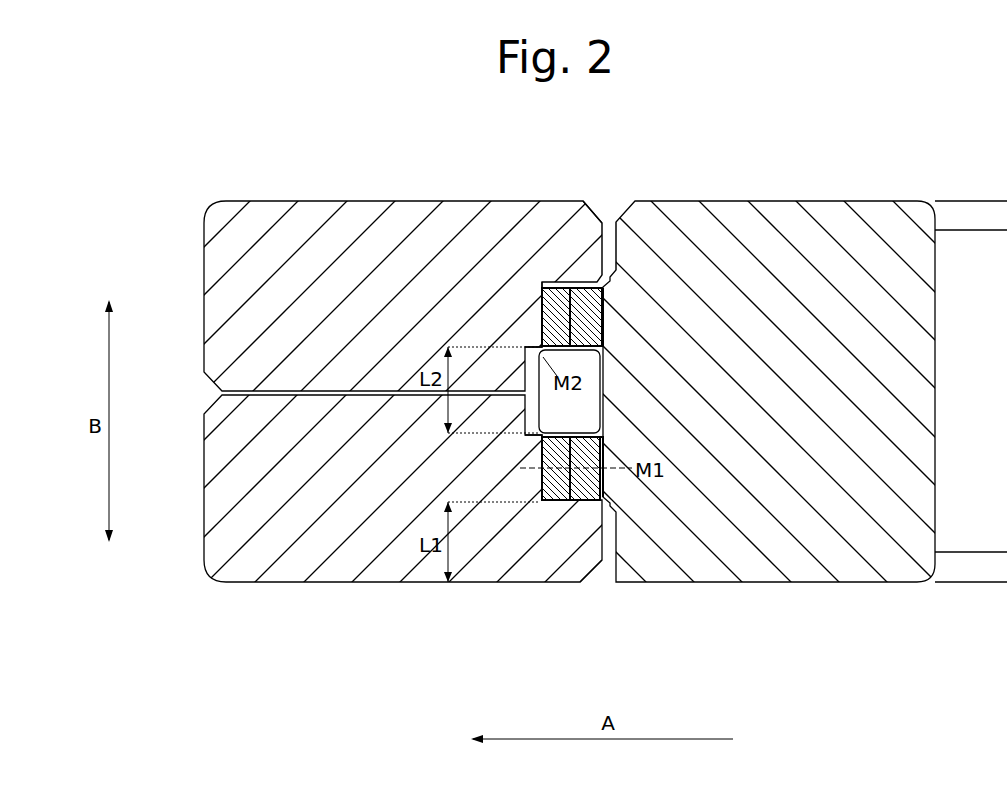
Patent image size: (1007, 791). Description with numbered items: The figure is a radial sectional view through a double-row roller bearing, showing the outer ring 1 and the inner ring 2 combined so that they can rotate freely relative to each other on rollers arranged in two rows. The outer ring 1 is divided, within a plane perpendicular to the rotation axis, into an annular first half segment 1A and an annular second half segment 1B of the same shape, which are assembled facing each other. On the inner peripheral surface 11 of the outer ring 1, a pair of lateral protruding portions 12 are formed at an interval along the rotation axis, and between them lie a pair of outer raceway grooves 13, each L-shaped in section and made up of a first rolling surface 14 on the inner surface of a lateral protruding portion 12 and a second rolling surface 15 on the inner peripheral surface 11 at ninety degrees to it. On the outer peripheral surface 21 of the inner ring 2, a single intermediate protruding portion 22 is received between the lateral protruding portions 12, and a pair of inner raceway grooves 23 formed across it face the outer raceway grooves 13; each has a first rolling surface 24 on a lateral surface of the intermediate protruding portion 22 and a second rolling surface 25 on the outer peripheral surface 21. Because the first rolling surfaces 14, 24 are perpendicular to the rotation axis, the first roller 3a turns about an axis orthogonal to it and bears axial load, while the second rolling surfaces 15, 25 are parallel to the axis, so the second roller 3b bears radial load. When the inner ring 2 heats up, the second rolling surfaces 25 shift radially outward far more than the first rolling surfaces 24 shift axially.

The outer ring 1 is at (493, 386).
The first half segment 1A is at (328, 222).
The second half segment 1B is at (279, 573).
The inner ring 2 is at (803, 198).
The first roller 3a is at (612, 496).
The second roller 3b is at (611, 299).
The inner peripheral surface 11 is at (526, 346).
The lateral protruding portion 12 is at (582, 203).
The outer raceway groove 13 is at (599, 397).
The first rolling surface 14 is at (570, 290).
The second rolling surface 15 is at (545, 289).
The outer peripheral surface 21 is at (607, 258).
The intermediate protruding portion 22 is at (553, 410).
The inner raceway groove 23 is at (664, 391).
The first rolling surface 24 is at (604, 346).
The second rolling surface 25 is at (605, 324).